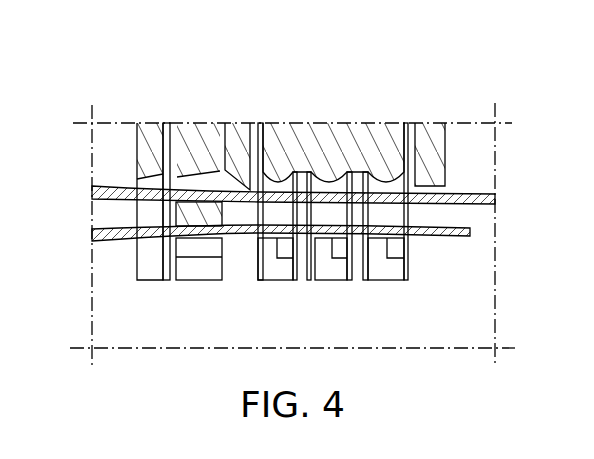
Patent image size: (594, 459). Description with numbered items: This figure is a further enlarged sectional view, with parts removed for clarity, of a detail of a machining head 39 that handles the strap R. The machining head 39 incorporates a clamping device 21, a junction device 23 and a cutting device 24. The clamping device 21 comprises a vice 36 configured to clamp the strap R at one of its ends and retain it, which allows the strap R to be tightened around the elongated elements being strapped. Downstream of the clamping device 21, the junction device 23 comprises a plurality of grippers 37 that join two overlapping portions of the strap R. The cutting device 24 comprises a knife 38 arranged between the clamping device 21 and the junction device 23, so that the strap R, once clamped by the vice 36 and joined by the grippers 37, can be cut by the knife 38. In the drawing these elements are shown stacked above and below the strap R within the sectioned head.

The clamping device 21 is at (158, 292).
The junction device 23 is at (405, 305).
The cutting device 24 is at (237, 111).
The vice 36 is at (203, 281).
The grippers 37 is at (277, 281).
The knife 38 is at (237, 133).
The machining head 39 is at (363, 108).
The strap R is at (462, 198).